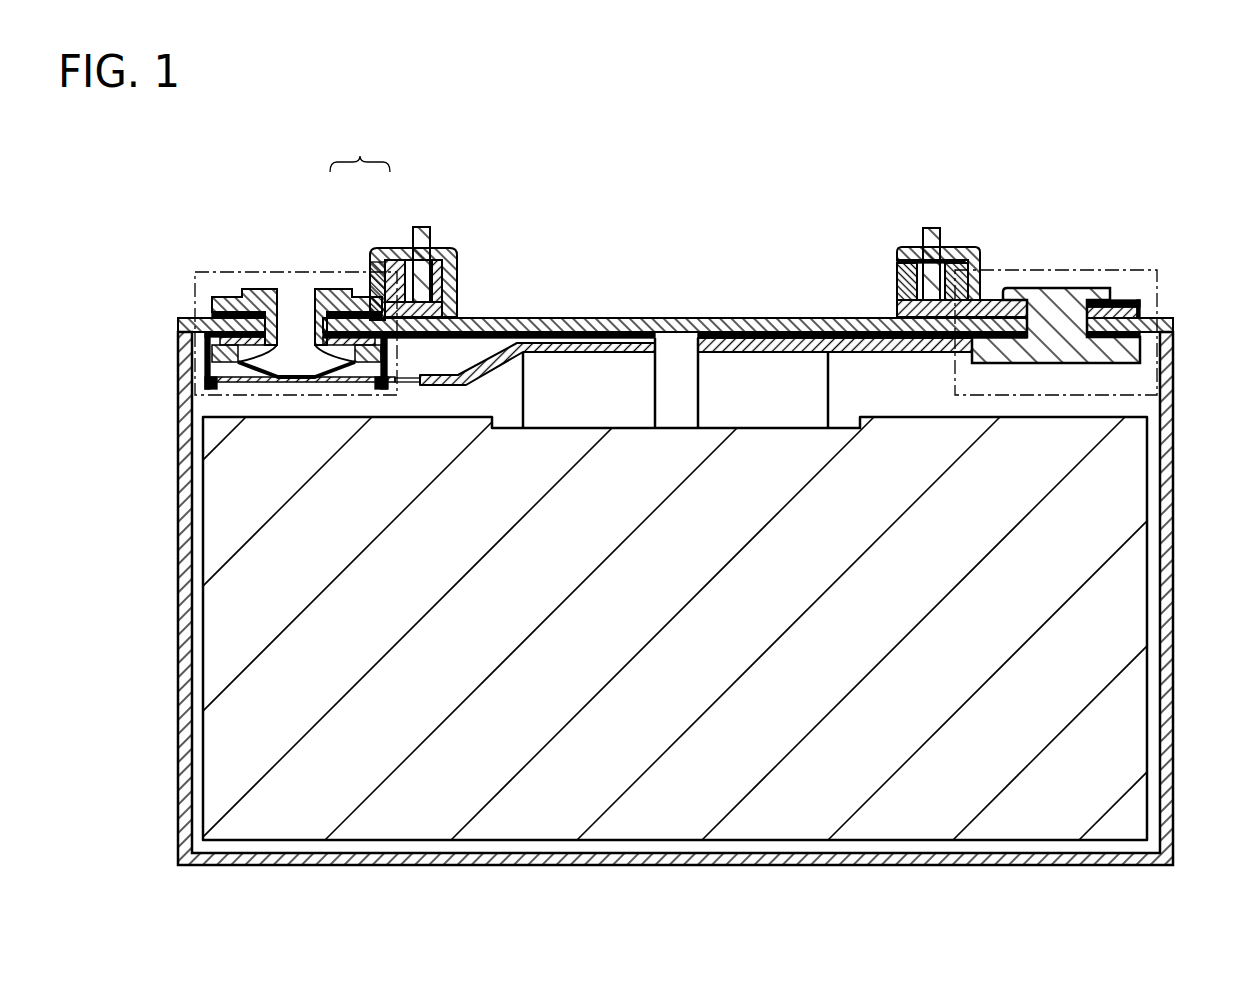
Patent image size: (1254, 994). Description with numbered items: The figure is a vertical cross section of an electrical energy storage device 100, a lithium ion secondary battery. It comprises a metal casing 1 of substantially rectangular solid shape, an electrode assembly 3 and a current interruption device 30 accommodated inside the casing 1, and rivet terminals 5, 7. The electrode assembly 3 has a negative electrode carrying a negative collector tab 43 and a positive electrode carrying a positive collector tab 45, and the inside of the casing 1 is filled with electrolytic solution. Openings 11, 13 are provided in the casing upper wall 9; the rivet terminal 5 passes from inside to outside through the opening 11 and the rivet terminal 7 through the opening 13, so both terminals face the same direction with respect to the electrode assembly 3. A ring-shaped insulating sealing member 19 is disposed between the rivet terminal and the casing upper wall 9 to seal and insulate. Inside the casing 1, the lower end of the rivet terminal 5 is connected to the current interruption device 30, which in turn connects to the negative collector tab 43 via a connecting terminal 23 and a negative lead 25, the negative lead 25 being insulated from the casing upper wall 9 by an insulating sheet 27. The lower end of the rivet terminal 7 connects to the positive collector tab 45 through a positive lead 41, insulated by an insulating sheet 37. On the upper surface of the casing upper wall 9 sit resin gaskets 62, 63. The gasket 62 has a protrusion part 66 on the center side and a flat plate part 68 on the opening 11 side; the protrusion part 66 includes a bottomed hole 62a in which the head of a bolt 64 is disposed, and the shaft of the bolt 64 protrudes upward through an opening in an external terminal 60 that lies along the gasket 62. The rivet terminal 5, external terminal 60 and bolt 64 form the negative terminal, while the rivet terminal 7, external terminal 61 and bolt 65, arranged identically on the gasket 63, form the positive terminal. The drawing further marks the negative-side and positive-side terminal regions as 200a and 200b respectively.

The casing 1 is at (1163, 588).
The electrode assembly 3 is at (1090, 682).
The rivet terminal 5 is at (306, 272).
The rivet terminal 7 is at (1086, 278).
The casing upper wall 9 is at (687, 332).
The opening 11 is at (270, 290).
The opening 13 is at (1115, 300).
The sealing member 19 is at (255, 366).
The connecting terminal 23 is at (418, 375).
The negative lead 25 is at (500, 345).
The insulating sheet 27 is at (548, 326).
The current interruption device 30 is at (233, 403).
The insulating sheet 37 is at (855, 340).
The positive lead 41 is at (812, 336).
The negative collector tab 43 is at (608, 370).
The positive collector tab 45 is at (757, 366).
The external terminal 60 is at (445, 240).
The external terminal 61 is at (958, 247).
The gasket 62 is at (360, 150).
The bottomed hole 62a is at (398, 265).
The gasket 63 is at (900, 266).
The bolt 64 is at (432, 244).
The bolt 65 is at (930, 248).
The protrusion part 66 is at (388, 295).
The flat plate part 68 is at (349, 300).
The electrical energy storage device 100 is at (968, 141).
The negative terminal structure 200a is at (208, 275).
The positive terminal structure 200b is at (1043, 268).